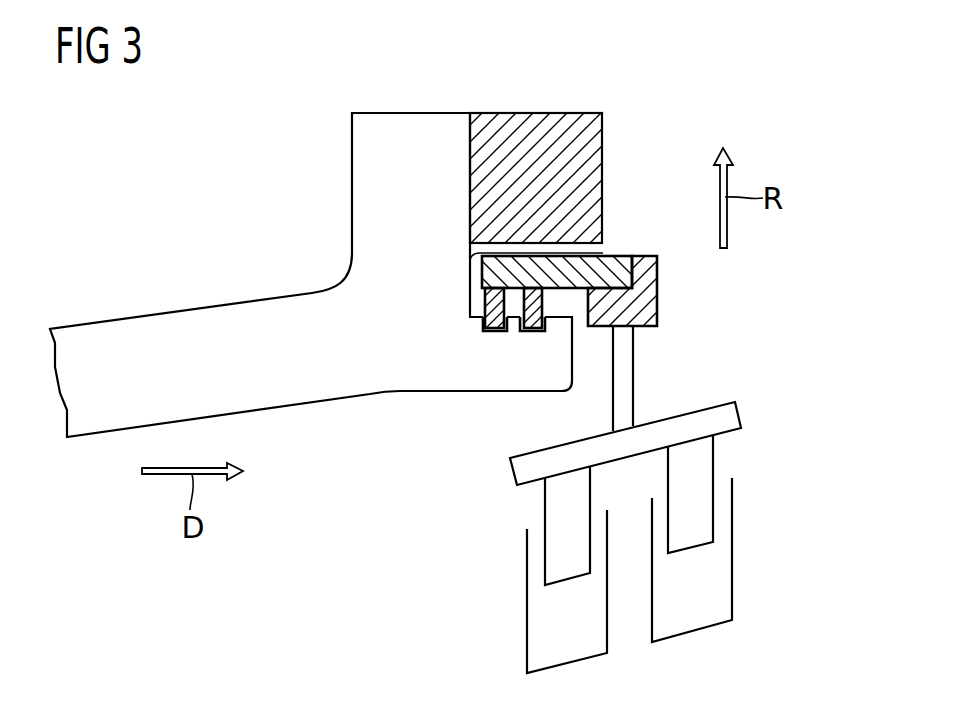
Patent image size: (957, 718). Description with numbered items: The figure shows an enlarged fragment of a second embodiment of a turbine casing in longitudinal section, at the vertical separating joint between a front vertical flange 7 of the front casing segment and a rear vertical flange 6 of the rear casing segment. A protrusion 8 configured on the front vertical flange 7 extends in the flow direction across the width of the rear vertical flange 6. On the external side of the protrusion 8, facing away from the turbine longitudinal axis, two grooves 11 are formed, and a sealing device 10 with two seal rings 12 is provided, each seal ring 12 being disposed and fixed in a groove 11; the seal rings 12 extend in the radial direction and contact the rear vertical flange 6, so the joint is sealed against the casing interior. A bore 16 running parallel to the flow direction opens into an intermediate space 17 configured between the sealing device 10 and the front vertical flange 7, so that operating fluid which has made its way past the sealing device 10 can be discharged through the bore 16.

The front vertical flange 7 is at (408, 106).
The rear vertical flange 6 is at (540, 106).
The bore 16 is at (616, 246).
The intermediate space 17 is at (470, 291).
The seal ring 12 is at (485, 307).
The groove 11 is at (472, 331).
The sealing device 10 is at (500, 332).
The protrusion 8 is at (494, 408).